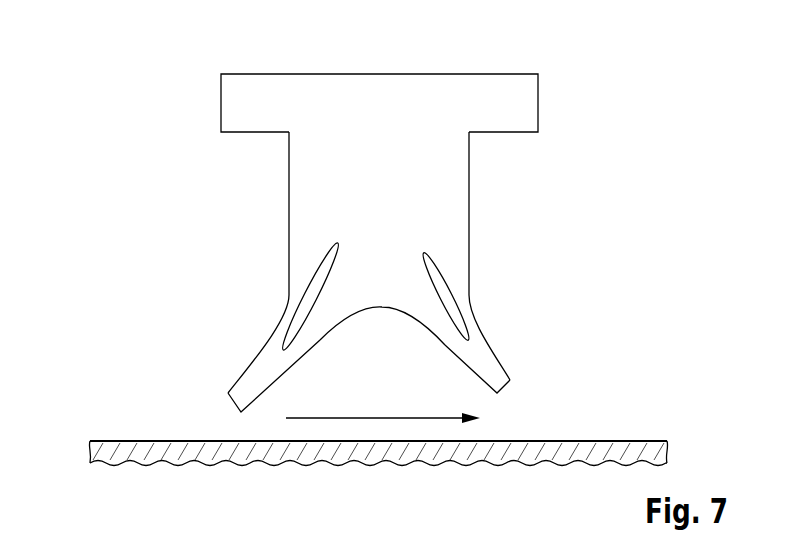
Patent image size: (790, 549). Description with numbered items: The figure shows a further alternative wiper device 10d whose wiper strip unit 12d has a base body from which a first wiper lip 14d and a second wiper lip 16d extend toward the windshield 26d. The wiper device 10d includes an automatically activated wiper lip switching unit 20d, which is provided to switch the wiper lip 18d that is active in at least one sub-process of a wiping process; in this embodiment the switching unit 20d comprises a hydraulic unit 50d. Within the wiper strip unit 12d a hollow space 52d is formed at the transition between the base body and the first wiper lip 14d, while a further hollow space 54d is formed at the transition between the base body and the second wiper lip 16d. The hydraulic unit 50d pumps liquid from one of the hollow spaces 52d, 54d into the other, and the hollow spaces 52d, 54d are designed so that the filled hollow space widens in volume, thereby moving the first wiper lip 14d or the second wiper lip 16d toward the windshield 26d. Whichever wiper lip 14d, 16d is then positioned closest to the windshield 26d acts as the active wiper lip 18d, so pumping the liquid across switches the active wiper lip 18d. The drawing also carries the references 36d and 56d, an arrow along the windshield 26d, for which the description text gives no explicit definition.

The wiper device 10d is at (128, 48).
The wiper strip unit 12d is at (380, 90).
The cleaning unit 36d is at (545, 170).
The automatically activated wiper lip switching unit 20d is at (528, 256).
The hydraulic unit 50d is at (490, 268).
The hollow space 52d is at (307, 298).
The further hollow space 54d is at (453, 308).
The first wiper lip 14d is at (216, 376).
The active wiper lip 18d is at (242, 397).
The second wiper lip 16d is at (498, 380).
The direction of movement 56d is at (373, 417).
The windshield 26d is at (527, 457).